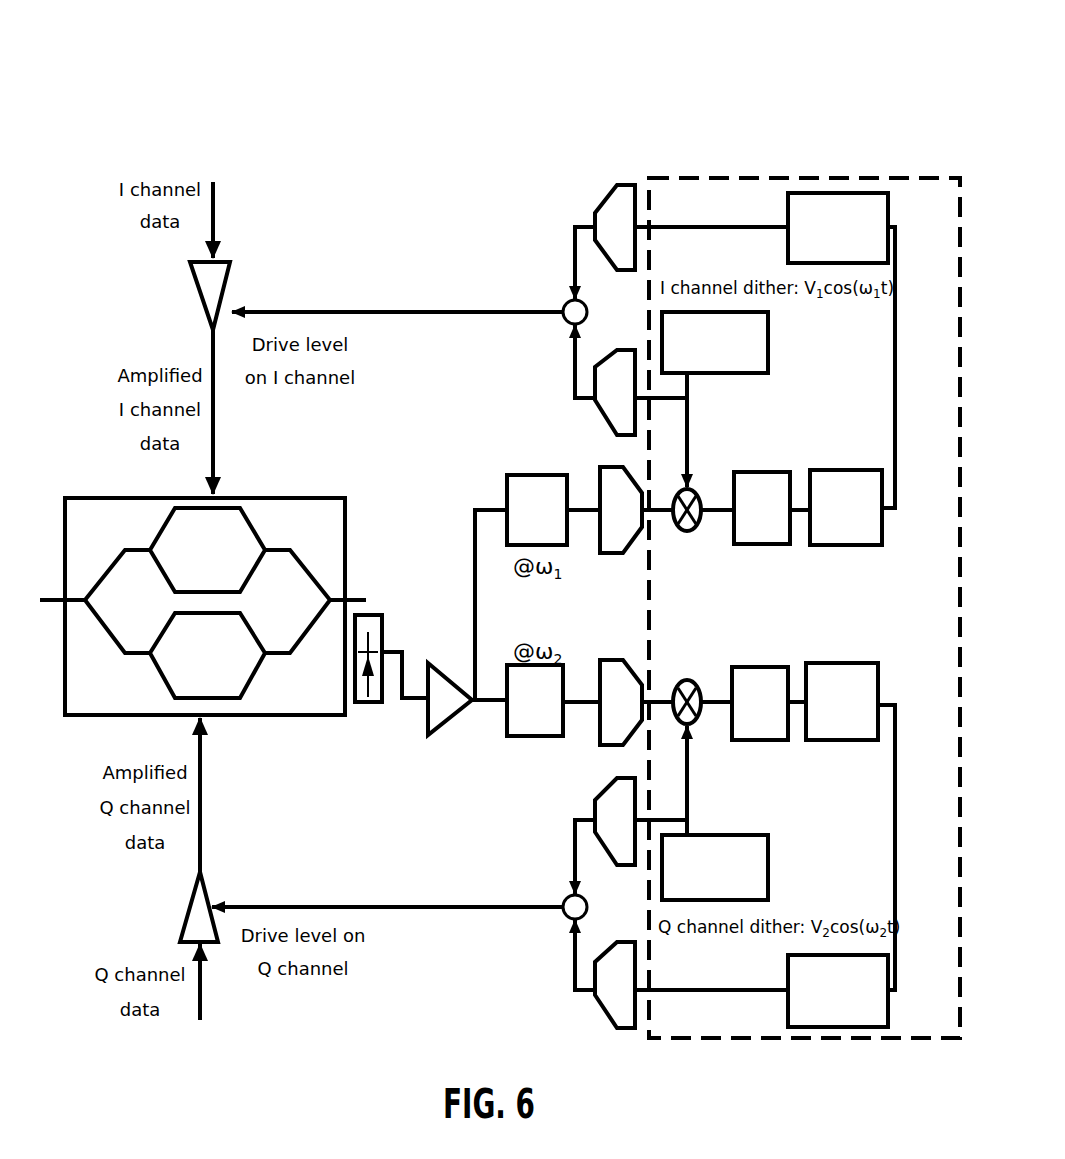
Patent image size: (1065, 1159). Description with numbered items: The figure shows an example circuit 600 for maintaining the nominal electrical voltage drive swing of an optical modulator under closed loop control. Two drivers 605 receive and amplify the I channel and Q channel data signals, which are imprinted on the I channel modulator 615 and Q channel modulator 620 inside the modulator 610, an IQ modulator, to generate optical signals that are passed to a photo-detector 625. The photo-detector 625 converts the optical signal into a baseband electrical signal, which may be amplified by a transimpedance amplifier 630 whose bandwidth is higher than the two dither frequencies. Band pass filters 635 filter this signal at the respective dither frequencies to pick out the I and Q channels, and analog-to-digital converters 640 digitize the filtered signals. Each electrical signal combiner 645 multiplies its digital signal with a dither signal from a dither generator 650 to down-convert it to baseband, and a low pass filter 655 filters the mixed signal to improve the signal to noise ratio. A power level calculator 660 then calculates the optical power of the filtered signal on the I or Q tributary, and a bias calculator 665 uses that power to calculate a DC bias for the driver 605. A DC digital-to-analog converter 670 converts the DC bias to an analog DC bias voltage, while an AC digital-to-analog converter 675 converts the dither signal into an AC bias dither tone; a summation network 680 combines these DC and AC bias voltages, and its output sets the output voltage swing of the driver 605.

The circuit 600 is at (116, 28).
The driver 605 is at (234, 258).
The modulator 610 is at (203, 606).
The I channel modulator 615 is at (207, 550).
The Q channel modulator 620 is at (207, 655).
The photo-detector 625 is at (358, 704).
The transimpedance amplifier 630 is at (437, 732).
The band pass filter 635 is at (504, 472).
The analog-to-digital converter 640 is at (597, 465).
The electrical signal combiner 645 is at (687, 533).
The dither generator 650 is at (771, 332).
The low pass filter 655 is at (758, 546).
The power level calculator 660 is at (847, 547).
The bias calculator 665 is at (812, 191).
The DC digital-to-analog converter 670 is at (623, 183).
The AC digital-to-analog converter 675 is at (623, 348).
The summation network 680 is at (563, 298).